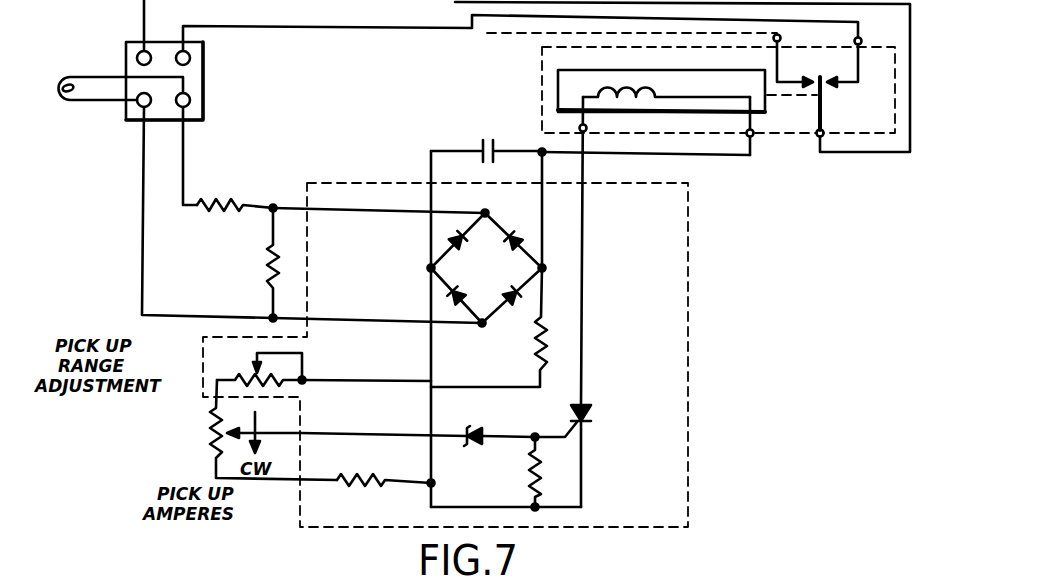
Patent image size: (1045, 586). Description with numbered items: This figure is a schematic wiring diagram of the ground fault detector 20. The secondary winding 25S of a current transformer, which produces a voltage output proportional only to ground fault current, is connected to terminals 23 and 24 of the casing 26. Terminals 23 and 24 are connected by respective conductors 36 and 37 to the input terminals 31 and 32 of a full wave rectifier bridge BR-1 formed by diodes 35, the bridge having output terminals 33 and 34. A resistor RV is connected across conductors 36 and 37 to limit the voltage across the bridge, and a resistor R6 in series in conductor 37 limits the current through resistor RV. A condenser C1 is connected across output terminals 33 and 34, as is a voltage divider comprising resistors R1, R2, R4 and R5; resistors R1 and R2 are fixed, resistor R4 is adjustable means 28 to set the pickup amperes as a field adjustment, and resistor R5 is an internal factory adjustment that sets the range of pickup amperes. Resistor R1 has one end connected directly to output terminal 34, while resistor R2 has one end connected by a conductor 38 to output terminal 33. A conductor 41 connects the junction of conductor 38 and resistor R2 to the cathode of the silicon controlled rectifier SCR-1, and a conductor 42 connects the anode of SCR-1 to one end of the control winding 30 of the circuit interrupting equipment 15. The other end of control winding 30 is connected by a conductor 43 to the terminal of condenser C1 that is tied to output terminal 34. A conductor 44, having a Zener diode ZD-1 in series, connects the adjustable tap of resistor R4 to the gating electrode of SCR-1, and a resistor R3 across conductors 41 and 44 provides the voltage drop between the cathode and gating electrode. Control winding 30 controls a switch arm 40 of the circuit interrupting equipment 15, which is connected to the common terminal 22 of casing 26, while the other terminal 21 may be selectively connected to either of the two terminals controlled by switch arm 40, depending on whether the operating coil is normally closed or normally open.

The circuit interrupting equipment 15 is at (740, 55).
The ground fault detector 20 is at (689, 333).
The terminal 21 is at (191, 58).
The common terminal 22 is at (140, 48).
The terminal 23 is at (140, 108).
The terminal 24 is at (191, 101).
The secondary winding 25S is at (62, 78).
The casing 26 is at (205, 86).
The adjustable means 28 is at (262, 428).
The control winding 30 is at (648, 69).
The input terminal 31 is at (480, 328).
The input terminal 32 is at (486, 211).
The output terminal 33 is at (428, 268).
The output terminal 34 is at (543, 267).
The diodes 35 is at (455, 236).
The conductor 36 is at (335, 290).
The conductor 37 is at (320, 214).
The conductor 38 is at (428, 346).
The switch arm 40 is at (817, 104).
The conductor 41 is at (470, 493).
The conductor 42 is at (584, 300).
The conductor 43 is at (720, 156).
The conductor 44 is at (375, 422).
The resistor R1 is at (537, 350).
The resistor R2 is at (381, 479).
The resistor R3 is at (532, 464).
The resistor R4 is at (212, 441).
The resistor R5 is at (243, 374).
The resistor R6 is at (243, 204).
The resistor RV is at (268, 256).
The condenser C1 is at (497, 138).
The full wave rectifier bridge BR-1 is at (490, 278).
The Zener diode ZD-1 is at (500, 418).
The silicon controlled rectifier SCR-1 is at (591, 416).